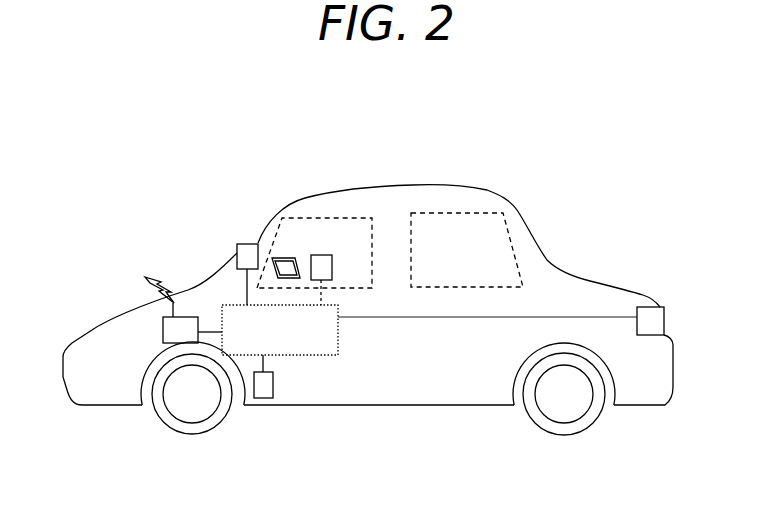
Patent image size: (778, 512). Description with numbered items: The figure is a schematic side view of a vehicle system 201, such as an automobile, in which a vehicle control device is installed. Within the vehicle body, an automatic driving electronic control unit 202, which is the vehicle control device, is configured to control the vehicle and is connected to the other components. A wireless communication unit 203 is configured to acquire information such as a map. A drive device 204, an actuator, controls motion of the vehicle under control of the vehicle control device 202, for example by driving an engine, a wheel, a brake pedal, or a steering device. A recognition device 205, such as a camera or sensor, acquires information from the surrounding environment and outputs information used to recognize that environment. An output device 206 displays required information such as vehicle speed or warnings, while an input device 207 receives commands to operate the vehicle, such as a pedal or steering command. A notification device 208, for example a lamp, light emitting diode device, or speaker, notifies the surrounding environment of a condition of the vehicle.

The vehicle system 201 is at (289, 201).
The automatic driving electronic control unit 202 is at (305, 357).
The wireless communication unit 203 is at (163, 328).
The drive device 204 is at (260, 400).
The recognition device 205 is at (237, 252).
The output device 206 is at (278, 257).
The input device 207 is at (333, 268).
The notification device 208 is at (665, 307).